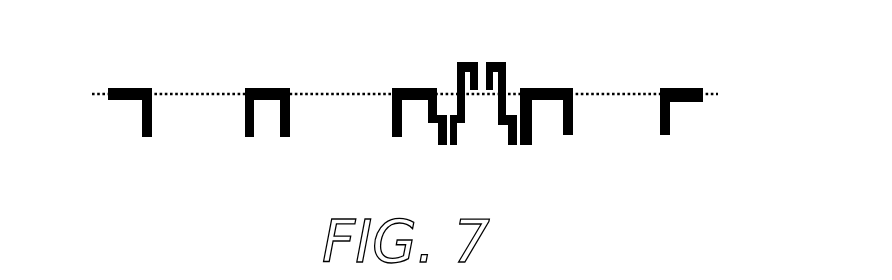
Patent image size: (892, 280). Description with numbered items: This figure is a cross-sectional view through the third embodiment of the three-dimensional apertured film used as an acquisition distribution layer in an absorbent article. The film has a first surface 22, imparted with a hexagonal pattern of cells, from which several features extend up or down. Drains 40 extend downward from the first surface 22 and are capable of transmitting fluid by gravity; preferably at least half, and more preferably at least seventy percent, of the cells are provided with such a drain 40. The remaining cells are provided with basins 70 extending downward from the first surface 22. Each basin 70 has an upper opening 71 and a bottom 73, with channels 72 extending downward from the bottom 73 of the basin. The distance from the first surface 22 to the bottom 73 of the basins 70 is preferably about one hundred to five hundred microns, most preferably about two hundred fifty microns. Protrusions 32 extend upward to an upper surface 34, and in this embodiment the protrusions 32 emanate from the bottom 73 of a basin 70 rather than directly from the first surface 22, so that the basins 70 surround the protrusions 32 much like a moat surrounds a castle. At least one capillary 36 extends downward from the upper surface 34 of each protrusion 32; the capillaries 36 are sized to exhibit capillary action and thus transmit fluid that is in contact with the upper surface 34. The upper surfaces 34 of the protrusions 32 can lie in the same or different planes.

The first surface 22 is at (270, 88).
The protrusion 32 is at (505, 72).
The upper surface 34 is at (500, 63).
The capillary 36 is at (483, 68).
The drain 40 is at (622, 128).
The basin 70 is at (430, 122).
The upper opening 71 is at (438, 112).
The channel 72 is at (517, 133).
The bottom 73 is at (460, 123).